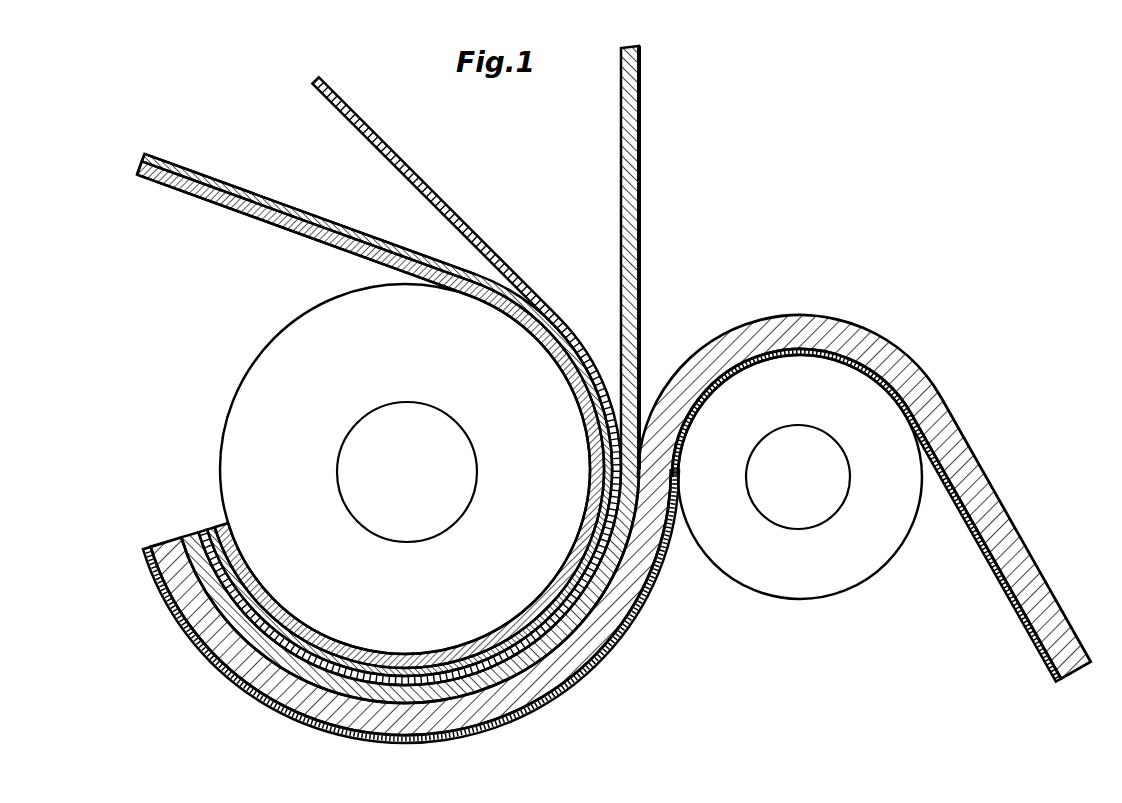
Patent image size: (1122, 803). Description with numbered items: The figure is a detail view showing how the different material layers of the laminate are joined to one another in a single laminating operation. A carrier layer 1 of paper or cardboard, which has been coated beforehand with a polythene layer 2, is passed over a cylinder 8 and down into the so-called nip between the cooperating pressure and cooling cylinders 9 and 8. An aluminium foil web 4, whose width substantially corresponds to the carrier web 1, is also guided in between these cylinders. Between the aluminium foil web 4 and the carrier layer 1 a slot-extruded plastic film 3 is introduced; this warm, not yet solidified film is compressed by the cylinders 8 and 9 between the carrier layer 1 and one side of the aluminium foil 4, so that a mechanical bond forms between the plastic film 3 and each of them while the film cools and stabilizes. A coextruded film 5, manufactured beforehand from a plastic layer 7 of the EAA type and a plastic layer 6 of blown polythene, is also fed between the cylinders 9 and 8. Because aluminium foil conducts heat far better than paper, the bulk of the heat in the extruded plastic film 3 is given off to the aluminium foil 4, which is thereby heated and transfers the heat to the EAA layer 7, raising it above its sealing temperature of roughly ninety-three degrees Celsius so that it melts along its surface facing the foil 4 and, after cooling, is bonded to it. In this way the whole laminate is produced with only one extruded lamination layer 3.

The carrier layer 1 is at (967, 446).
The polythene layer 2 is at (992, 574).
The slot-extruded plastic film 3 is at (640, 206).
The aluminium foil web 4 is at (448, 212).
The coextruded film 5 is at (198, 204).
The blown polythene plastic layer 6 is at (306, 236).
The EAA plastic layer 7 is at (221, 183).
The cooling cylinder 8 is at (777, 590).
The pressure cylinder 9 is at (230, 428).